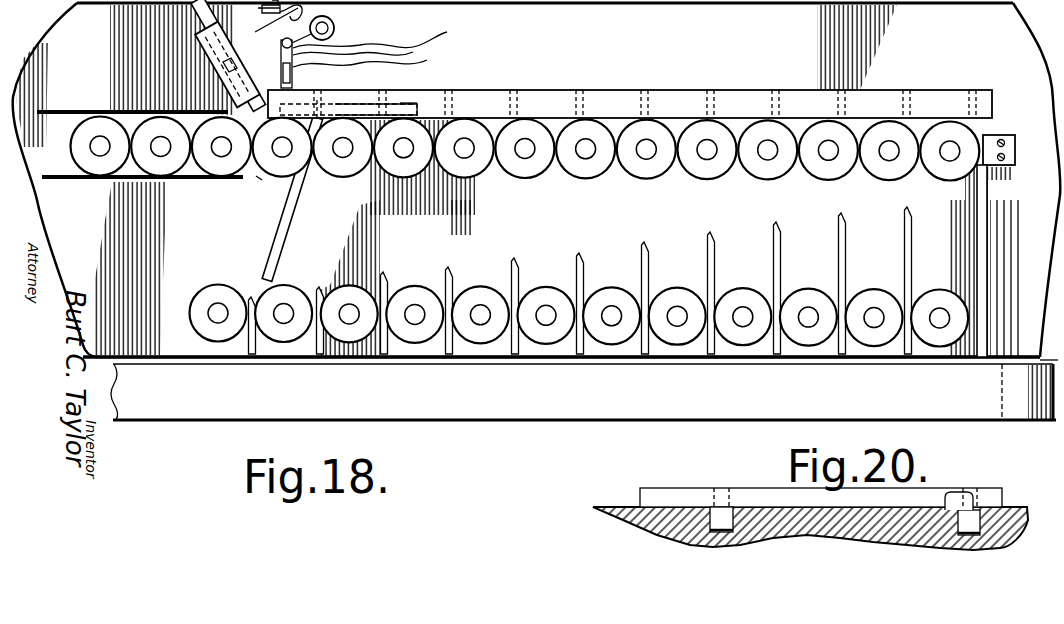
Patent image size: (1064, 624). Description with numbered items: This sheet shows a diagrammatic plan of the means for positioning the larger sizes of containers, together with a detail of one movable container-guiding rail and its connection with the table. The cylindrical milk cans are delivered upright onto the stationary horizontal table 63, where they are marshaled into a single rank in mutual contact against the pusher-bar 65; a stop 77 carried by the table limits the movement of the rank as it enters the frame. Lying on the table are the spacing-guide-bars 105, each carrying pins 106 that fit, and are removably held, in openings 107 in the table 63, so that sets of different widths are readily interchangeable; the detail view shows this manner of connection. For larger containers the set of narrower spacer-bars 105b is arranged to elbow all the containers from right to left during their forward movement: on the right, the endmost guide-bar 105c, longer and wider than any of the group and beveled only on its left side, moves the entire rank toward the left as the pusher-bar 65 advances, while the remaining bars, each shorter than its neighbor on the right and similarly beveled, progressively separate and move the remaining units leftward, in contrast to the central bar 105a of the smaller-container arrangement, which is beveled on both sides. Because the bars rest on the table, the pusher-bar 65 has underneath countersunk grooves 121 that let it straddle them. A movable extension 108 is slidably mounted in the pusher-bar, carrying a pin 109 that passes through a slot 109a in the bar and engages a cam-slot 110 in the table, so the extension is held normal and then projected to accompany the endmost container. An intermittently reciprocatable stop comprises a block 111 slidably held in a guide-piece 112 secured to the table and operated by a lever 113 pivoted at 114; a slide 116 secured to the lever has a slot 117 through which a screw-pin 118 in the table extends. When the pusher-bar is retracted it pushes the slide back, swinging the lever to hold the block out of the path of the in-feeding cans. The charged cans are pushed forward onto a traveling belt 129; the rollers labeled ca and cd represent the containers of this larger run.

In FIG. 18, the stationary horizontal table 63 is at (537, 181).
In FIG. 20, the stationary horizontal table 63 is at (623, 511).
In FIG. 18, the pusher-bar 65 is at (742, 98).
In FIG. 20, the pusher-bar 65 is at (821, 497).
In FIG. 18, the stop 77 is at (1018, 148).
In FIG. 18, the spacing-guide-bars 105 is at (777, 265).
In FIG. 20, the spacing-guide-bars 105 is at (757, 473).
In FIG. 18, the central bar 105a is at (933, 200).
In FIG. 18, the narrower spacer-bars 105b is at (648, 273).
In FIG. 18, the endmost guide-bar 105c is at (1007, 261).
In FIG. 20, the pins 106 is at (980, 520).
In FIG. 20, the openings 107 is at (973, 478).
In FIG. 18, the movable extension 108 is at (360, 100).
In FIG. 18, the pin 109 is at (319, 100).
In FIG. 18, the slot 109a is at (407, 103).
In FIG. 18, the cam-slot 110 is at (308, 193).
In FIG. 18, the block 111 is at (255, 189).
In FIG. 18, the guide-piece 112 is at (228, 56).
In FIG. 18, the lever 113 is at (353, 45).
In FIG. 18, the pivot 114 is at (334, 26).
In FIG. 18, the slide 116 is at (371, 57).
In FIG. 18, the slot 117 is at (385, 35).
In FIG. 18, the screw-pin 118 is at (276, 44).
In FIG. 18, the countersunk grooves 121 is at (707, 100).
In FIG. 18, the traveling belt 129 is at (583, 392).
In FIG. 18, the roller ca is at (587, 170).
In FIG. 18, the roller cd is at (540, 297).